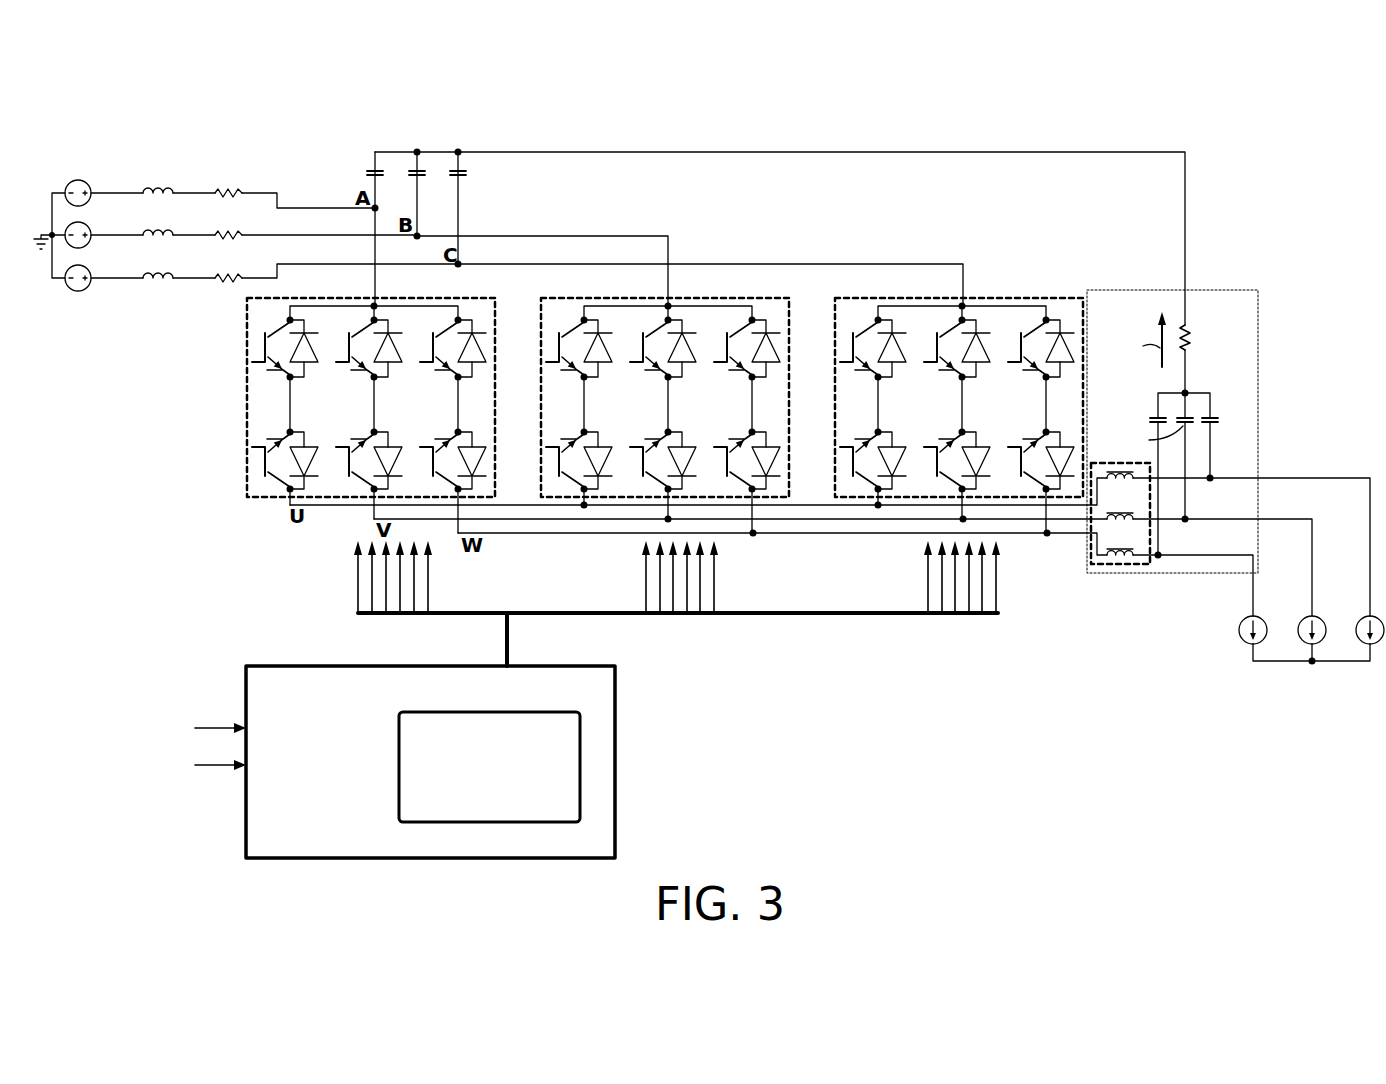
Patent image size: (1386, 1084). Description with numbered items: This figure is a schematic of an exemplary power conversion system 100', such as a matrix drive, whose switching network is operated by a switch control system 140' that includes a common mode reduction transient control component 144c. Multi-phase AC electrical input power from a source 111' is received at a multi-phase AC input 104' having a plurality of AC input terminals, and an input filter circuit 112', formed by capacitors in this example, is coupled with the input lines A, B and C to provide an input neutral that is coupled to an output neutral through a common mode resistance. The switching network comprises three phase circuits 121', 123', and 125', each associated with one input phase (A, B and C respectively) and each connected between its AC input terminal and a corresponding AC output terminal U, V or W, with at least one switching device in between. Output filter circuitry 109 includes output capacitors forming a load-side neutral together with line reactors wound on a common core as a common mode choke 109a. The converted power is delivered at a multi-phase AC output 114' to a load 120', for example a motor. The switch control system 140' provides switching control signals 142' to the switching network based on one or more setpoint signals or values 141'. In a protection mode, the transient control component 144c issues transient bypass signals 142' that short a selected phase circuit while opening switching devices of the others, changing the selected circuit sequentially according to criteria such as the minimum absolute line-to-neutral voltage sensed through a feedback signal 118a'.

The power conversion system 100' is at (838, 233).
The multi-phase AC input 104' is at (77, 212).
The source 111' is at (274, 260).
The input filter circuit 112' is at (384, 200).
The phase circuit 121' is at (371, 403).
The phase circuit 123' is at (665, 403).
The phase circuit 125' is at (959, 403).
The output filter circuitry 109 is at (1246, 290).
The common mode choke 109a is at (1100, 565).
The multi-phase AC output 114' is at (1251, 547).
The load 120' is at (1271, 644).
The switch control system 140' is at (396, 762).
The setpoint signals or values 141' is at (193, 717).
The feedback signal 118a' is at (186, 778).
The switching control signals 142' is at (677, 603).
The transient control component 144c is at (399, 737).